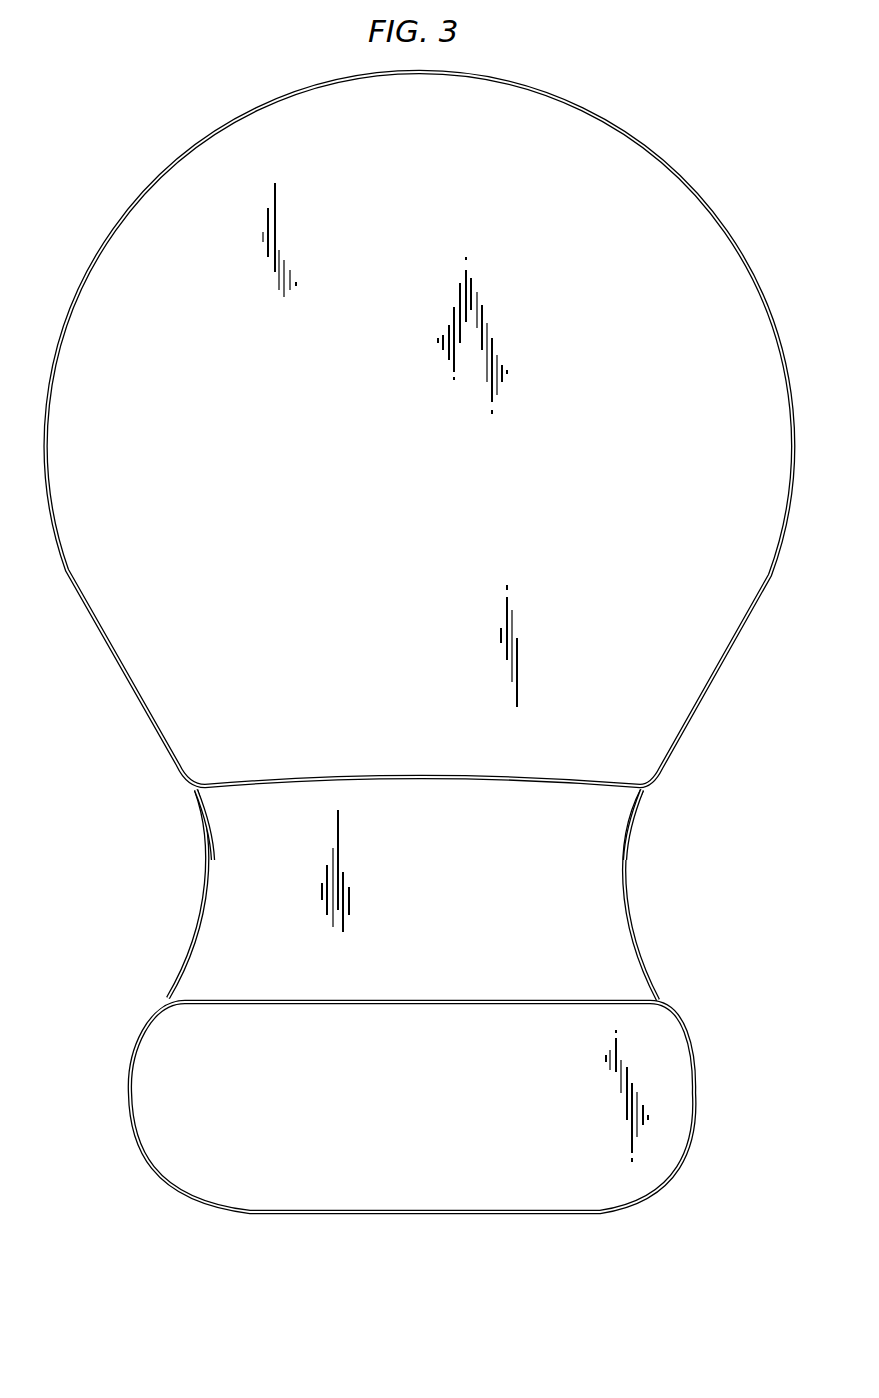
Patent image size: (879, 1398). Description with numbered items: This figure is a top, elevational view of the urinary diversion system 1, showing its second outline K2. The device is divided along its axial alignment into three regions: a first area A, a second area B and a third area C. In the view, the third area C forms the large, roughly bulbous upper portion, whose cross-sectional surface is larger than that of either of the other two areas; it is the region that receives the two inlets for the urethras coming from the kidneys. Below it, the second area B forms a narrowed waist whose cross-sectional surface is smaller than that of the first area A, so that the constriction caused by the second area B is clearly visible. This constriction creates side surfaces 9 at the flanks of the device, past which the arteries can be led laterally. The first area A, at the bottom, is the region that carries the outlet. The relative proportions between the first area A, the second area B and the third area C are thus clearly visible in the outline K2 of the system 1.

The urinary diversion system 1 is at (426, 642).
The second outline K2 is at (426, 429).
The third area C is at (755, 607).
The second area B is at (633, 940).
The first area A is at (690, 1130).
The side surfaces 9 is at (208, 882).